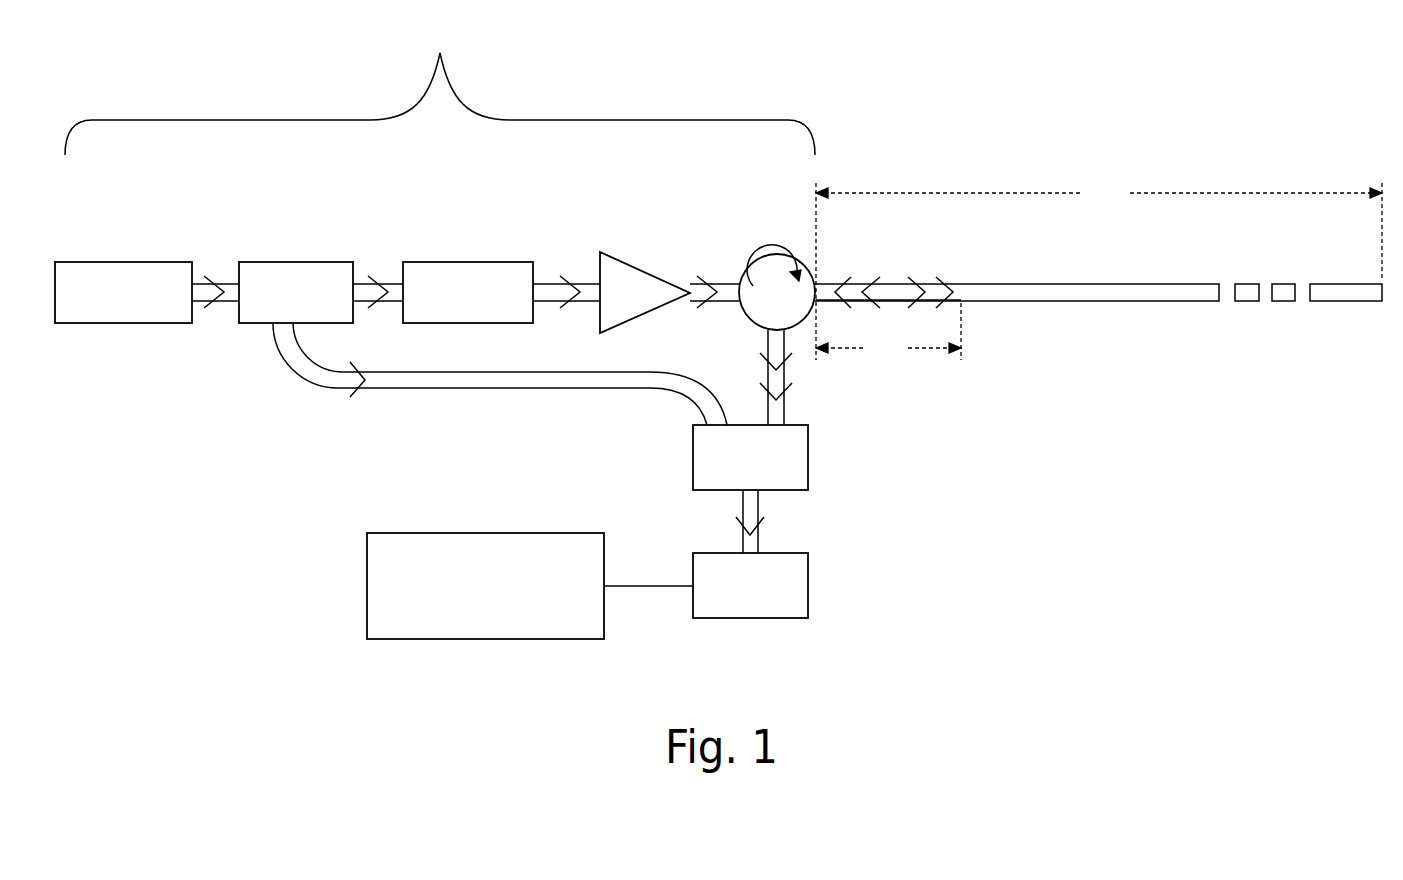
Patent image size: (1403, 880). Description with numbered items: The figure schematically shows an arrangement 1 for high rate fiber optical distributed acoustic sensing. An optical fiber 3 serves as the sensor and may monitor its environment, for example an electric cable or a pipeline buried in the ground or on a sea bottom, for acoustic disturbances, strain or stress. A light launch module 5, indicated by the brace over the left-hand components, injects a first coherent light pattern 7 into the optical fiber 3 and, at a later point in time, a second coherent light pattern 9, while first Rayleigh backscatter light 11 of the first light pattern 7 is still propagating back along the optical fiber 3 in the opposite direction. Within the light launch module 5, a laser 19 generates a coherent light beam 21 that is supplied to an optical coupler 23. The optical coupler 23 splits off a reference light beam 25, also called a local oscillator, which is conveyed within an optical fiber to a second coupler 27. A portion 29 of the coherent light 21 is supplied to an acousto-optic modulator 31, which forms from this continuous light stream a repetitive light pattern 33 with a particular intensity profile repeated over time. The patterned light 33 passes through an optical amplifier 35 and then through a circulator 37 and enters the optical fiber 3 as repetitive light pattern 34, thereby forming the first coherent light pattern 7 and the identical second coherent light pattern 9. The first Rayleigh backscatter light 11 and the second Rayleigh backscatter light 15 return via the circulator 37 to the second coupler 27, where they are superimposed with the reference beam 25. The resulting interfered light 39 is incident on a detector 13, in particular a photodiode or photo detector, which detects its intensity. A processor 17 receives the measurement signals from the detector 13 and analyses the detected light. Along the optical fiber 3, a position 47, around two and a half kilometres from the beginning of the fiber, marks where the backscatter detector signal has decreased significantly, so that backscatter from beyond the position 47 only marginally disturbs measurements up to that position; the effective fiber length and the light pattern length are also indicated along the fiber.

The arrangement 1 is at (1258, 157).
The optical fiber 3 is at (1092, 302).
The light launch module 5 is at (440, 53).
The first coherent light pattern 7 is at (940, 283).
The second coherent light pattern 9 is at (913, 283).
The first Rayleigh backscatter light 11 is at (767, 406).
The detector 13 is at (808, 592).
The second Rayleigh backscatter light 15 is at (767, 372).
The processor 17 is at (367, 593).
The laser 19 is at (107, 262).
The coherent light beam 21 is at (223, 285).
The optical coupler 23 is at (280, 262).
The reference light beam 25 is at (365, 392).
The second coupler 27 is at (808, 443).
The portion of the coherent light 29 is at (387, 285).
The acousto-optic modulator 31 is at (467, 262).
The repetitive light pattern 33 is at (578, 283).
The repetitive light pattern 34 is at (712, 282).
The optical amplifier 35 is at (645, 268).
The circulator 37 is at (737, 302).
The interfered light 39 is at (760, 533).
The position 47 is at (963, 310).